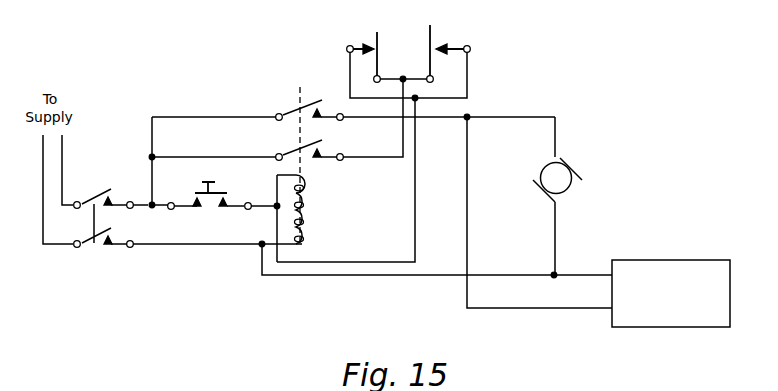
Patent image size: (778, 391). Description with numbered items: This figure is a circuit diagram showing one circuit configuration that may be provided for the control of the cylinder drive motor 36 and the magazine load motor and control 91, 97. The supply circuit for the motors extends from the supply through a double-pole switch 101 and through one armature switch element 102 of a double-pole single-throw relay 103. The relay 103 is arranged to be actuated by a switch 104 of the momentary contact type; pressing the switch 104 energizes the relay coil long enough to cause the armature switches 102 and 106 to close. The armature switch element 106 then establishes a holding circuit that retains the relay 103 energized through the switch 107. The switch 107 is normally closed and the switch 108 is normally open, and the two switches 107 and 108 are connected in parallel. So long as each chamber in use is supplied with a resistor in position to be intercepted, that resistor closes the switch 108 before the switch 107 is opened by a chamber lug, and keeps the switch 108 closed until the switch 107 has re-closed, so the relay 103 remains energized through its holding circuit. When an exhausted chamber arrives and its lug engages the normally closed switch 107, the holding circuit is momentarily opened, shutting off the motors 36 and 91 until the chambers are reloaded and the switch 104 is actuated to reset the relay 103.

The double-pole switch 101 is at (85, 193).
The armature switch element 102 is at (293, 103).
The double-pole single-throw relay 103 is at (325, 207).
The switch 104 is at (215, 188).
The armature switch element 106 is at (290, 148).
The switch 107 is at (365, 46).
The switch 108 is at (451, 44).
The cylinder drive motor 36 is at (558, 176).
The magazine load motor 91 is at (689, 275).
The magazine load motor control 97 is at (705, 268).